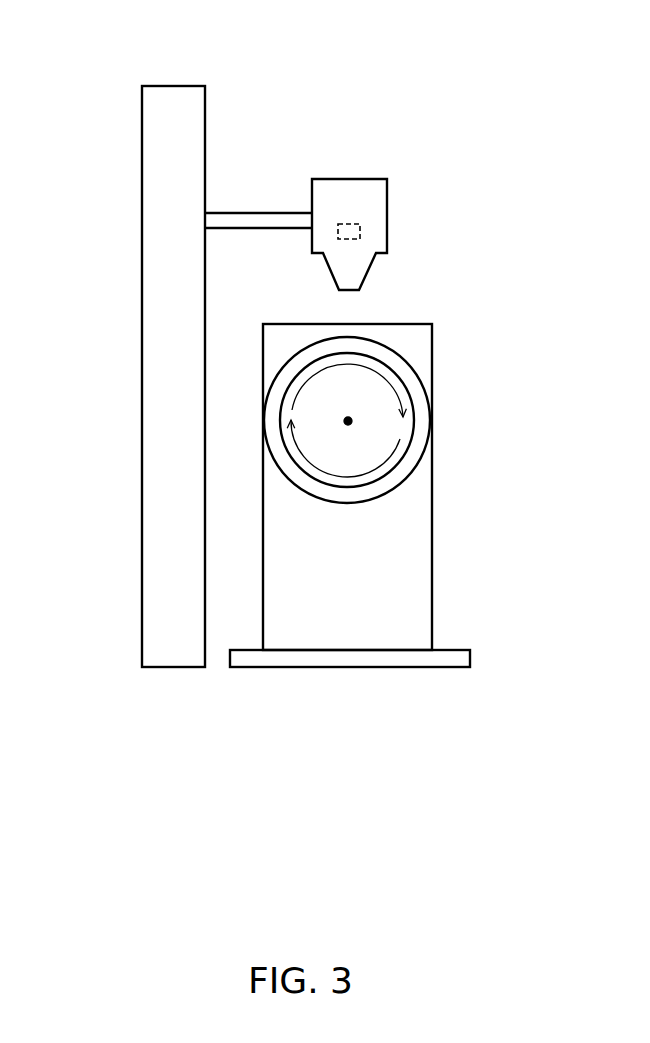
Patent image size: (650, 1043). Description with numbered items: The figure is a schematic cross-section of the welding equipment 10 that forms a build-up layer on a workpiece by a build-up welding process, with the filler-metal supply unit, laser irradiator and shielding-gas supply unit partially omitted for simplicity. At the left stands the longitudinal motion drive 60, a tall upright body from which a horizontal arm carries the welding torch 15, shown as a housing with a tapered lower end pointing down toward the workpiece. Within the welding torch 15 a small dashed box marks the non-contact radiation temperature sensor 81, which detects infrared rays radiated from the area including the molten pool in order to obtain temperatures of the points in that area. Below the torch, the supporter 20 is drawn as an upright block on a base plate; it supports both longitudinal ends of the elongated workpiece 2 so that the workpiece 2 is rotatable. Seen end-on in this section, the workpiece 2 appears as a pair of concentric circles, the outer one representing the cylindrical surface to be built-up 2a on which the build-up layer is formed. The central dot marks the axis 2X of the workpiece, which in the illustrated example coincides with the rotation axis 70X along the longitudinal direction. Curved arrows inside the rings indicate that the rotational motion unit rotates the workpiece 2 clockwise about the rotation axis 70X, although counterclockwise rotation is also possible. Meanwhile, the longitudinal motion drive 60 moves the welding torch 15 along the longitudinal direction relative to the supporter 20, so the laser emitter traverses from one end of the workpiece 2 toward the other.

The welding equipment 10 is at (518, 93).
The longitudinal motion drive 60 is at (132, 351).
The welding torch 15 is at (312, 196).
The temperature sensor 81 is at (360, 229).
The supporter 20 is at (434, 553).
The workpiece 2 is at (392, 430).
The surface to be built-up 2a is at (400, 467).
The axis of the workpiece 2X is at (444, 425).
The rotation axis 70X is at (352, 420).